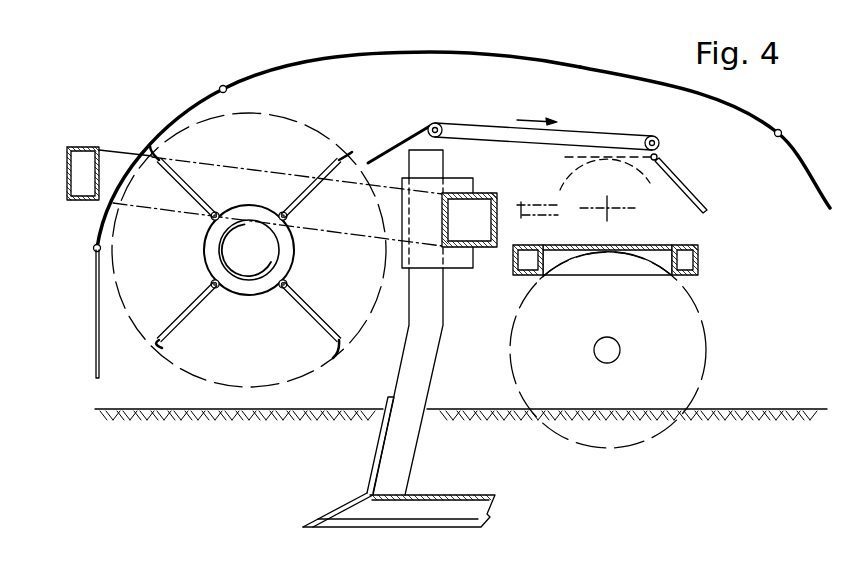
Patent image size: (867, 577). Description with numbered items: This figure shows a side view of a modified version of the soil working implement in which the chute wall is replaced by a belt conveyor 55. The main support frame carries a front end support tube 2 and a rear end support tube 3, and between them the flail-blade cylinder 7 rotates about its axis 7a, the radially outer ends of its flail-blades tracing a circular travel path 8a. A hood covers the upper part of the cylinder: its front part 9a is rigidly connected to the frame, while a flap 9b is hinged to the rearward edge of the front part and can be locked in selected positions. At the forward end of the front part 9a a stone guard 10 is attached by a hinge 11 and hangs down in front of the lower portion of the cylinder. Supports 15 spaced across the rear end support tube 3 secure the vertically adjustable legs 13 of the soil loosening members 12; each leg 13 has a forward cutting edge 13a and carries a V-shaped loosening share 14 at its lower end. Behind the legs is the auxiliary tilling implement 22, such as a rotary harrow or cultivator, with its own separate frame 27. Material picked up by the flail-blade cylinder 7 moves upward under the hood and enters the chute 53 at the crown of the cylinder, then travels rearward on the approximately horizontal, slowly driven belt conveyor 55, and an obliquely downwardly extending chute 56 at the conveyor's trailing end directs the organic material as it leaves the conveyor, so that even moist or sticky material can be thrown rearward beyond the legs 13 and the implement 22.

The front end support tube 2 is at (84, 147).
The rear end support tube 3 is at (497, 226).
The flail-blade cylinder 7 is at (162, 348).
The axis of the flail-blade cylinder 7a is at (250, 246).
The circular travel path of the flail-blades 8a is at (295, 386).
The front part of the hood 9a is at (153, 124).
The flap 9b is at (802, 176).
The stone guard 10 is at (99, 341).
The hinge 11 is at (100, 248).
The soil loosening member 12 is at (370, 455).
The leg 13 is at (430, 306).
The forward edge of the leg 13a is at (401, 374).
The loosening share 14 is at (442, 510).
The support 15 is at (457, 178).
The auxiliary implement 22 is at (710, 299).
The frame of the auxiliary implement 27 is at (699, 256).
The chute 53 is at (398, 142).
The belt conveyor 55 is at (592, 131).
The obliquely downwardly extending chute 56 is at (683, 184).